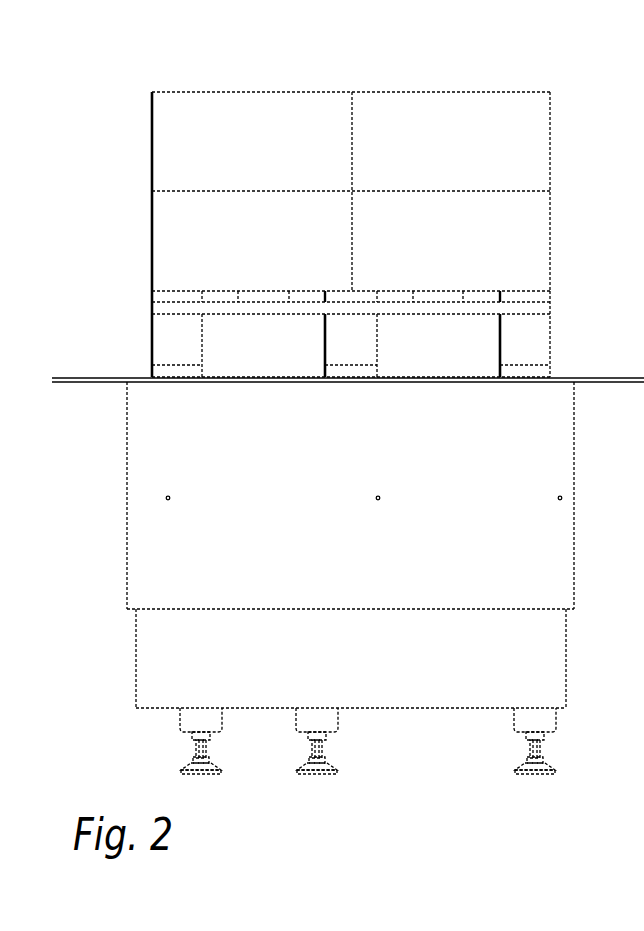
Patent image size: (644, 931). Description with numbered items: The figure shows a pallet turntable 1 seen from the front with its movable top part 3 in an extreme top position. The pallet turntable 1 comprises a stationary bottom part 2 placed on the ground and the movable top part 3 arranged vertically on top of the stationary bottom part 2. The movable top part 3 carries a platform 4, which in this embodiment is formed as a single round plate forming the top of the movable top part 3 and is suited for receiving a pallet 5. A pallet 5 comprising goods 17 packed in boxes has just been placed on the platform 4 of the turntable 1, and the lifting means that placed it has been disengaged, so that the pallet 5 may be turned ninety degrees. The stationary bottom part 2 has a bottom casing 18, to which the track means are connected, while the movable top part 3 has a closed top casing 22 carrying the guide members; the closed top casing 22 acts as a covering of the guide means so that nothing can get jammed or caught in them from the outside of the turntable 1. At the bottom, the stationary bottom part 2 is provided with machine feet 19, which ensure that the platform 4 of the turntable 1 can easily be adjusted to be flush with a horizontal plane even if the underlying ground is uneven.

The pallet turntable 1 is at (102, 277).
The stationary bottom part 2 is at (291, 658).
The bottom casing 18 is at (178, 670).
The movable top part 3 is at (295, 495).
The top casing 22 is at (190, 465).
The platform 4 is at (583, 378).
The pallet 5 is at (185, 348).
The goods 17 is at (197, 128).
The machine feet 19 is at (318, 762).